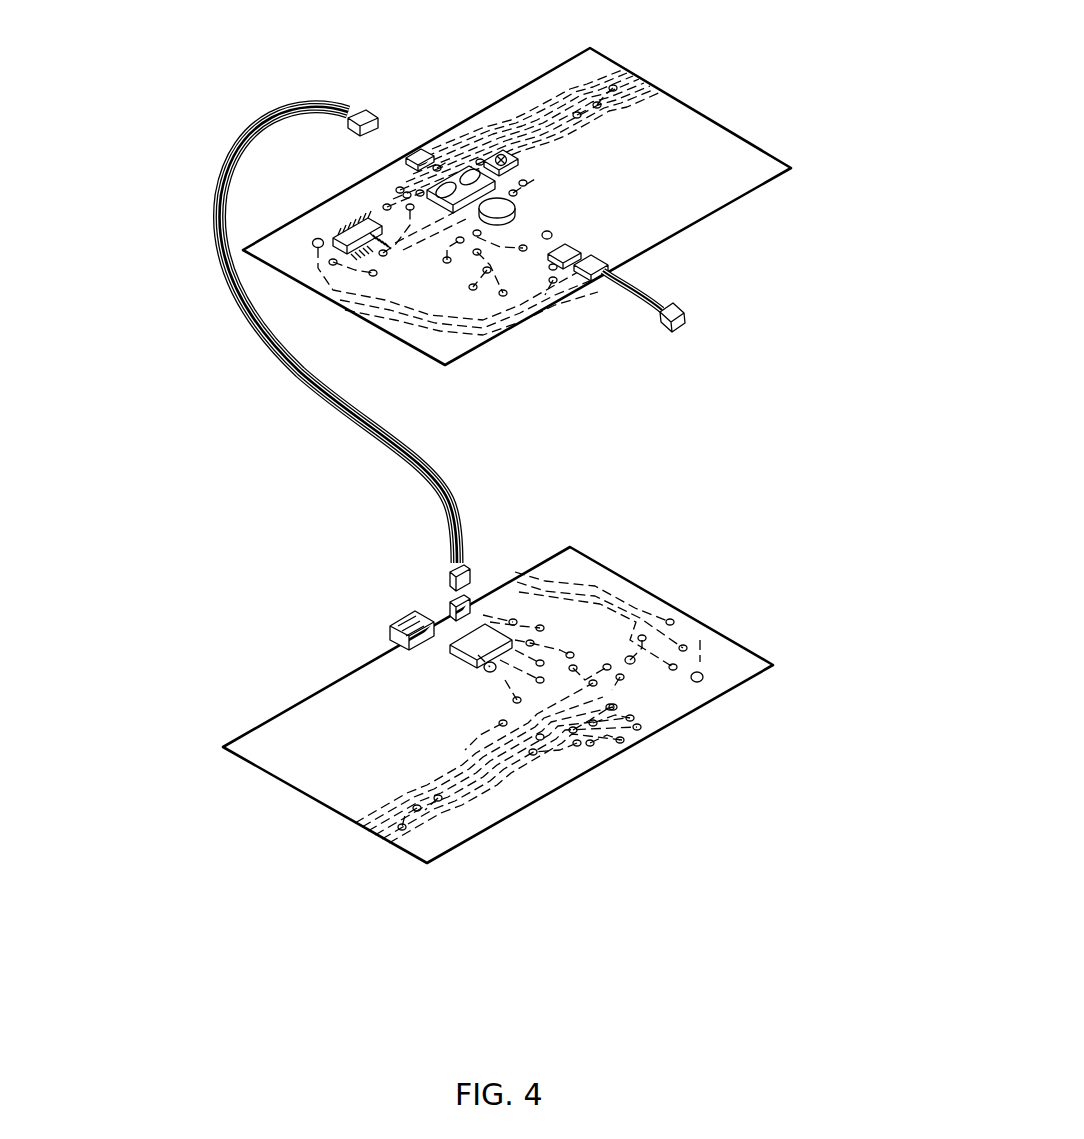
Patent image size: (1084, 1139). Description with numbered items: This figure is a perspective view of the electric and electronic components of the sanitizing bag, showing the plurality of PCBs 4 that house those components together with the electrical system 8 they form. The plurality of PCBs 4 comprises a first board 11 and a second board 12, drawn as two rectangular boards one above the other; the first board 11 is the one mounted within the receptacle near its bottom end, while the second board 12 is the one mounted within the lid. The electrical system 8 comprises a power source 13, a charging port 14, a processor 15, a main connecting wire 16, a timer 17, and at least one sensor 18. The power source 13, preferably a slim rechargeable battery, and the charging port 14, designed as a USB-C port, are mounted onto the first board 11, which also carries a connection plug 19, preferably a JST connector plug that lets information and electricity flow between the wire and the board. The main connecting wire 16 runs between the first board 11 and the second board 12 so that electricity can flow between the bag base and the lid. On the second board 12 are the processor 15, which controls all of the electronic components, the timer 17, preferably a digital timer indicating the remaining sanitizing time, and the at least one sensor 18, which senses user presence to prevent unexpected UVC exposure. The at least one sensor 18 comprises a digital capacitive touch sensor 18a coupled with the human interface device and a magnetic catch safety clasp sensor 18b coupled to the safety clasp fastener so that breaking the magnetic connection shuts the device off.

The plurality of PCBs 4 is at (509, 434).
The electrical system 8 is at (775, 513).
The first board 11 is at (307, 778).
The second board 12 is at (708, 130).
The power source 13 is at (510, 152).
The charging port 14 is at (388, 630).
The processor 15 is at (347, 218).
The main connecting wire 16 is at (270, 357).
The timer 17 is at (449, 187).
The at least one sensor 18 is at (689, 320).
The digital capacitive touch sensor 18a is at (495, 225).
The magnetic catch safety clasp sensor 18b is at (673, 326).
The connection plug 19 is at (467, 597).